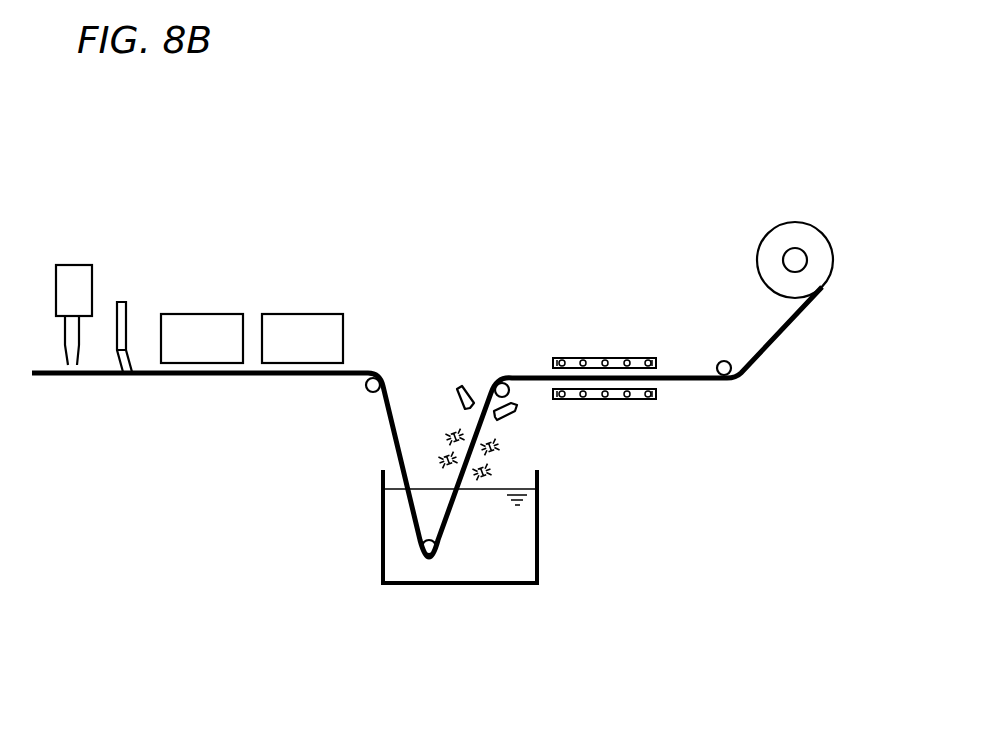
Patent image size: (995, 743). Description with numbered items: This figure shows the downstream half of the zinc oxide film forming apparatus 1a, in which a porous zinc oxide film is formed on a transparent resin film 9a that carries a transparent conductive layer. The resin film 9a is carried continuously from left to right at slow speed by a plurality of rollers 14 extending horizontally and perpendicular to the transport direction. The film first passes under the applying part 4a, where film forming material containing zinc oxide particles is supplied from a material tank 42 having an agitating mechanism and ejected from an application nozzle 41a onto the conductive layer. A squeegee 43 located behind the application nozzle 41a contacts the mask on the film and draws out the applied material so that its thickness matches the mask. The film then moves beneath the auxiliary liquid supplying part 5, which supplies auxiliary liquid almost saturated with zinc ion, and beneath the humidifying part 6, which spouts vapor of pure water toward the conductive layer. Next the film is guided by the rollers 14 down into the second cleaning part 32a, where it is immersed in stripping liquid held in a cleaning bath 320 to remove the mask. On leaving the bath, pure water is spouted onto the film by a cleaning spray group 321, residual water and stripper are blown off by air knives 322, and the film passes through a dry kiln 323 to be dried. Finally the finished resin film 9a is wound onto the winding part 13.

The zinc oxide film forming apparatus 1a is at (323, 152).
The applying part 4a is at (110, 212).
The material tank 42 is at (63, 298).
The application nozzle 41a is at (73, 337).
The squeegee 43 is at (128, 326).
The auxiliary liquid supplying part 5 is at (201, 314).
The humidifying part 6 is at (302, 314).
The rollers 14 is at (372, 394).
The second cleaning part 32a is at (519, 454).
The cleaning bath 320 is at (462, 585).
The cleaning spray group 321 is at (512, 456).
The air knives 322 is at (522, 413).
The dry kiln 323 is at (604, 338).
The winding part 13 is at (795, 257).
The resin film 9a is at (762, 347).